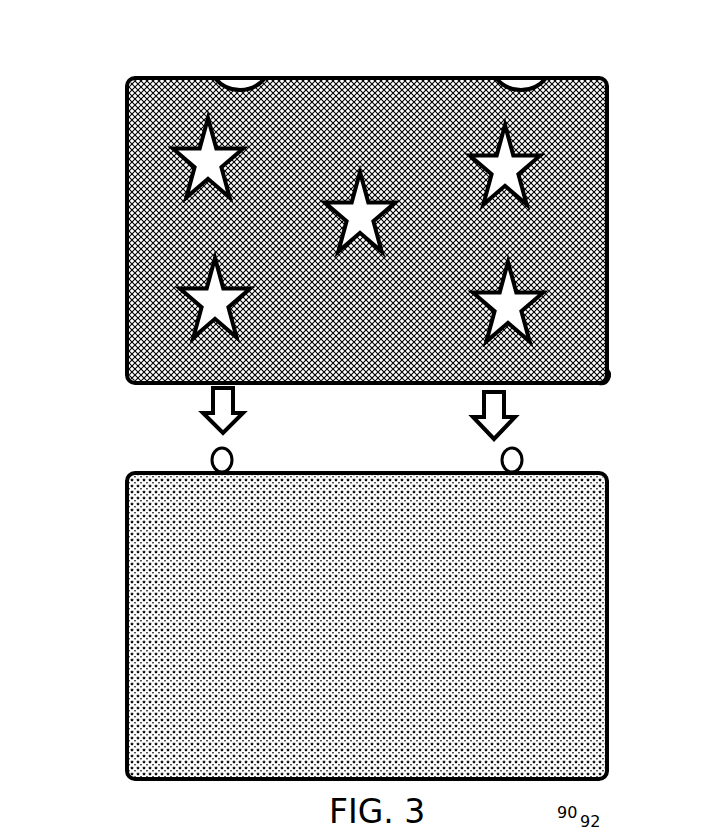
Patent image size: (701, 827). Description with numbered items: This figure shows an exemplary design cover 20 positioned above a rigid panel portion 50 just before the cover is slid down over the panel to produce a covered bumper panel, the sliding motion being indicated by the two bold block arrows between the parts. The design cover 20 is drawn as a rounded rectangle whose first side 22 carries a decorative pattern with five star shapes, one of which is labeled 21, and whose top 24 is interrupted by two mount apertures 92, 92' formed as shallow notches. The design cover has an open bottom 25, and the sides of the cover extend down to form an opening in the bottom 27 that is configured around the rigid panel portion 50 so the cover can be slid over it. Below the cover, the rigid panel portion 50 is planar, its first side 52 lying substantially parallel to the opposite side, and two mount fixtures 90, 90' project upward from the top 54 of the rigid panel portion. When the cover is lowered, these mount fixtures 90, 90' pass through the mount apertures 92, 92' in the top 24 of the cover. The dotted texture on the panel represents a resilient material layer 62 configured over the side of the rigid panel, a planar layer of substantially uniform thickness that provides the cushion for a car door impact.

The design cover 20 is at (112, 111).
The star-shaped openings 21 is at (528, 296).
The first side 22 is at (586, 215).
The top 24 is at (462, 78).
The open bottom 25 is at (170, 386).
The bottom 27 is at (590, 385).
The mount aperture 92 is at (236, 54).
The mount aperture 92' is at (537, 53).
The rigid panel portion 50 is at (108, 530).
The first side 52 is at (580, 610).
The top 54 is at (586, 473).
The resilient material layer 62 is at (588, 655).
The mount fixture 90 is at (248, 446).
The mount fixture 90' is at (545, 445).